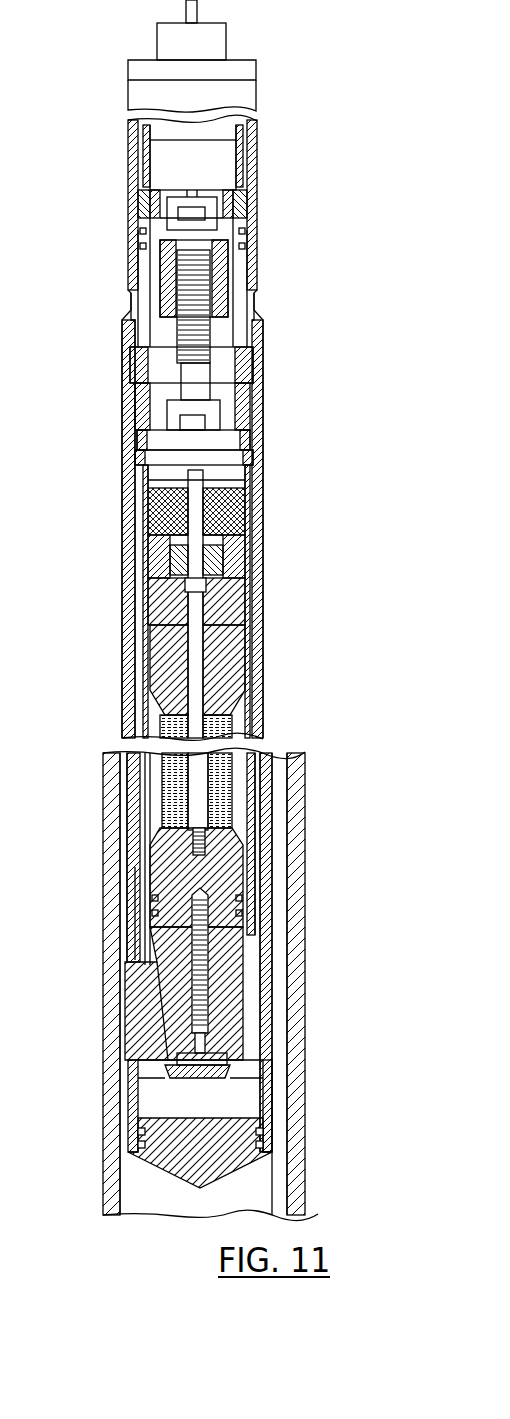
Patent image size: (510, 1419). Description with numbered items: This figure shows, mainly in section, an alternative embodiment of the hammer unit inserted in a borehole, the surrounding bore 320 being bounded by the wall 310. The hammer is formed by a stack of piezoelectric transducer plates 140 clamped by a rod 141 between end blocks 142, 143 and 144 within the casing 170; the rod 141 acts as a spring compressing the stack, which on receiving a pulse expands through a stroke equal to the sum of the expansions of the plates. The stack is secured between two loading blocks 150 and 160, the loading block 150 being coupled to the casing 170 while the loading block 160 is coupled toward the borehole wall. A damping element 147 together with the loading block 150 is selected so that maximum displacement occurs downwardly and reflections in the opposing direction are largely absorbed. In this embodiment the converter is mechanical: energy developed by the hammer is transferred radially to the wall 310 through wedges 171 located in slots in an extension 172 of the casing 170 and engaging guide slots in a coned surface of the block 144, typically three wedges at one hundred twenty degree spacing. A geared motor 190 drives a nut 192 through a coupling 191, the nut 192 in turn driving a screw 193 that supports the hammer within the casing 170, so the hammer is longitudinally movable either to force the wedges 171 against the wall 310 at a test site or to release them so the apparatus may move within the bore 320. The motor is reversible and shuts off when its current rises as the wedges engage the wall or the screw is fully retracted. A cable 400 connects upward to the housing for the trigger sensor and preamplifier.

The cable 400 is at (205, 14).
The geared motor 190 is at (250, 72).
The casing 170 is at (258, 395).
The coupling 191 is at (205, 200).
The nut 192 is at (215, 244).
The screw 193 is at (200, 307).
The damping element 147 is at (245, 497).
The loading block 150 is at (248, 545).
The end block 142 is at (215, 605).
The end block 143 is at (220, 648).
The rod 141 is at (200, 690).
The piezoelectric transducer plates 140 is at (215, 788).
The end block 144 is at (227, 877).
The bore 320 is at (283, 903).
The wall 310 is at (300, 958).
The wedges 171 is at (160, 1010).
The extension 172 is at (270, 1070).
The loading block 160 is at (235, 1170).